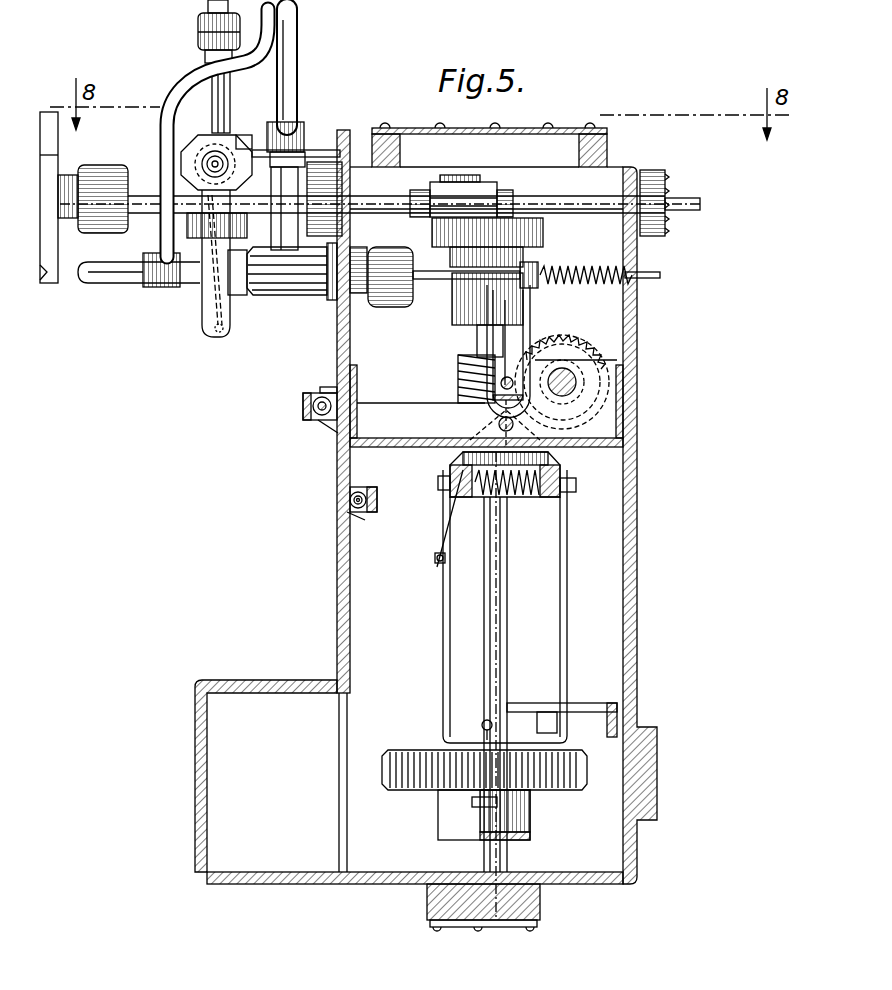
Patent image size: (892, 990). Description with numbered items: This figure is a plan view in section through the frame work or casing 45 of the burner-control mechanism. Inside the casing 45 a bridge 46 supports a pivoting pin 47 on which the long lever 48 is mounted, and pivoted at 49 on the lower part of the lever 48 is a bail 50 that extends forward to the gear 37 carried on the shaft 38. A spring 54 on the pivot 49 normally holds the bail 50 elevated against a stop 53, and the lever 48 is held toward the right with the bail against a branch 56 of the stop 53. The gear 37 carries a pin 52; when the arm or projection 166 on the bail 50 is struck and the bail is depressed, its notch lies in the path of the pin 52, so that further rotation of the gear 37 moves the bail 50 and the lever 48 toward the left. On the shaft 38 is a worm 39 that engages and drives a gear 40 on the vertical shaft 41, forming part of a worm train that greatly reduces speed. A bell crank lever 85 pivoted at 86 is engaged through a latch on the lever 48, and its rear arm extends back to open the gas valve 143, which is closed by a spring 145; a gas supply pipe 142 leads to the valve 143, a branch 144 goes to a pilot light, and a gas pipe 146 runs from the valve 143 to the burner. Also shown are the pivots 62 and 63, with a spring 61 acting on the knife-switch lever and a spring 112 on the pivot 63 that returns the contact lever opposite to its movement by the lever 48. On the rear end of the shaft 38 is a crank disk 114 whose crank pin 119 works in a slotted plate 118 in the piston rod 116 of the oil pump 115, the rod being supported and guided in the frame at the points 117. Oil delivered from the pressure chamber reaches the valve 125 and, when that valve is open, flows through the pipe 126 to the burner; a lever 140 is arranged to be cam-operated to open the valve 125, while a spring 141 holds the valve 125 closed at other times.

The gear 37 is at (432, 772).
The shaft 38 is at (493, 608).
The worm 39 is at (460, 376).
The gear 40 is at (600, 345).
The vertical shaft 41 is at (556, 395).
The frame work or casing 45 is at (630, 592).
The bridge 46 is at (583, 448).
The pivoting pin 47 is at (497, 424).
The long lever 48 is at (450, 480).
The pivot 49 is at (576, 488).
The bail 50 is at (568, 592).
The pin 52 is at (482, 726).
The stop 53 is at (540, 710).
The spring 54 is at (515, 496).
The branch of the stop 56 is at (547, 722).
The spring 61 is at (356, 492).
The pivot 62 is at (364, 508).
The pivot 63 is at (318, 418).
The bell crank lever 85 is at (523, 300).
The pivot pin 86 is at (500, 348).
The spring 112 is at (310, 395).
The crank disk 114 is at (540, 234).
The oil pump 115 is at (78, 309).
The piston rod 116 is at (587, 198).
The guide points 117 is at (330, 166).
The slotted plate 118 is at (445, 200).
The crank pin 119 is at (470, 178).
The valve 125 is at (198, 162).
The pipe 126 is at (210, 120).
The lever 140 is at (205, 320).
The spring 141 is at (268, 356).
The gas supply pipe 142 is at (140, 310).
The gas valve 143 is at (300, 316).
The branch 144 is at (186, 78).
The spring 145 is at (600, 283).
The gas pipe 146 is at (288, 50).
The arm or projection 166 is at (436, 563).